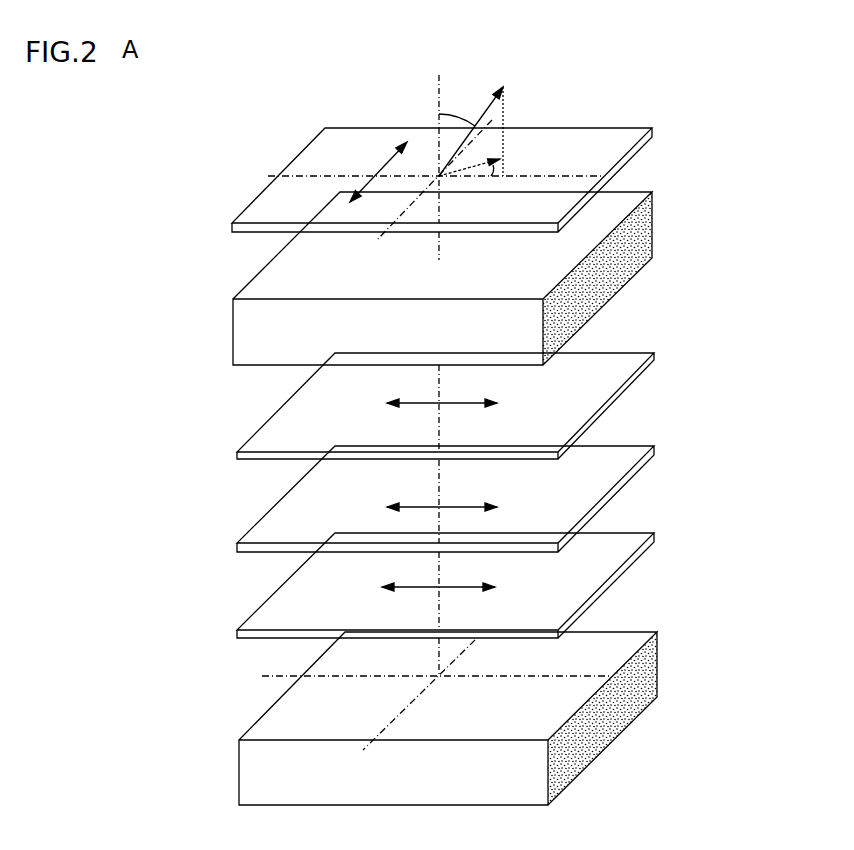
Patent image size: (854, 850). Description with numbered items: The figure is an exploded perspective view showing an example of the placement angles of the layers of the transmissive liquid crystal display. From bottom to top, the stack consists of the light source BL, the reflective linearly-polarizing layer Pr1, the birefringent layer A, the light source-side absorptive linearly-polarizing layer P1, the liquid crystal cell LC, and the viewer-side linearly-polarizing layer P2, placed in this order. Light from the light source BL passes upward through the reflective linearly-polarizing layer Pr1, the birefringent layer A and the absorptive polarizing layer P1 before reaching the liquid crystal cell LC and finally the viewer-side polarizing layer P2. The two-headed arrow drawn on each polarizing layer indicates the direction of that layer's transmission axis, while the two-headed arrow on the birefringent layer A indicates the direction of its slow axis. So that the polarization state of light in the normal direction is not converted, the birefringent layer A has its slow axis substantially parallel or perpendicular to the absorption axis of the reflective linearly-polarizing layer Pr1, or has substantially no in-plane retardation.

The viewer-side linearly-polarizing layer P2 is at (623, 167).
The liquid crystal cell LC is at (600, 272).
The light source-side absorptive linearly-polarizing layer P1 is at (617, 393).
The birefringent layer A is at (628, 482).
The reflective linearly-polarizing layer Pr1 is at (620, 567).
The light source BL is at (617, 703).